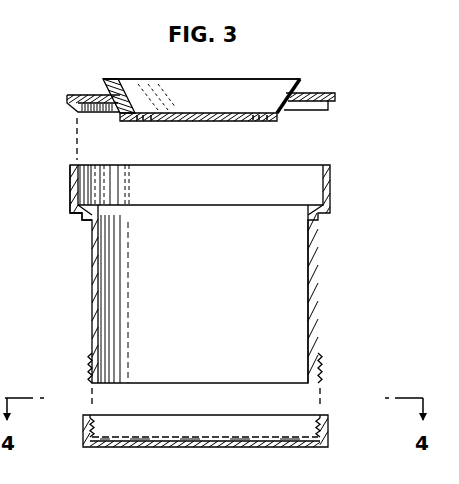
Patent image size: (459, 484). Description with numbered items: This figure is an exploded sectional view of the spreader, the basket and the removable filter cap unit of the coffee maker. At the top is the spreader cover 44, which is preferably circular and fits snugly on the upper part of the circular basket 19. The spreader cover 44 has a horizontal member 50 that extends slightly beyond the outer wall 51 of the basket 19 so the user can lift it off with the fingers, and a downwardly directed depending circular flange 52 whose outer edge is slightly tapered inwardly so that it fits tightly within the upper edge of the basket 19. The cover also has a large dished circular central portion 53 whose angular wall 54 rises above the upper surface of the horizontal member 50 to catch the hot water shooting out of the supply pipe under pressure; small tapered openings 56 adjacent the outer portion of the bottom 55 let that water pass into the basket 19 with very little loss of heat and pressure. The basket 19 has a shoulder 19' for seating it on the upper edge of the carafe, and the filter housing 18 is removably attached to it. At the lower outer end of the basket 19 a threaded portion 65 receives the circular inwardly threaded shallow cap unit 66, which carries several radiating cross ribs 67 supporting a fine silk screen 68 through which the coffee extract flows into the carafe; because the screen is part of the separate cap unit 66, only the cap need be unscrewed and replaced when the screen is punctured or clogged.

The spreader cover 44 is at (92, 74).
The angular wall 54 is at (120, 82).
The bottom 55 is at (186, 110).
The dished circular central portion 53 is at (253, 90).
The horizontal member 50 is at (305, 97).
The depending circular flange 52 is at (78, 107).
The tapered openings 56 is at (152, 119).
The outer wall 51 is at (70, 186).
The basket 19 is at (231, 274).
The shoulder 19' is at (62, 237).
The threaded portion 65 is at (322, 372).
The shallow cap unit 66 is at (86, 431).
The cross ribs 67 is at (165, 443).
The silk screen 68 is at (267, 437).
The filter housing 18 is at (336, 436).